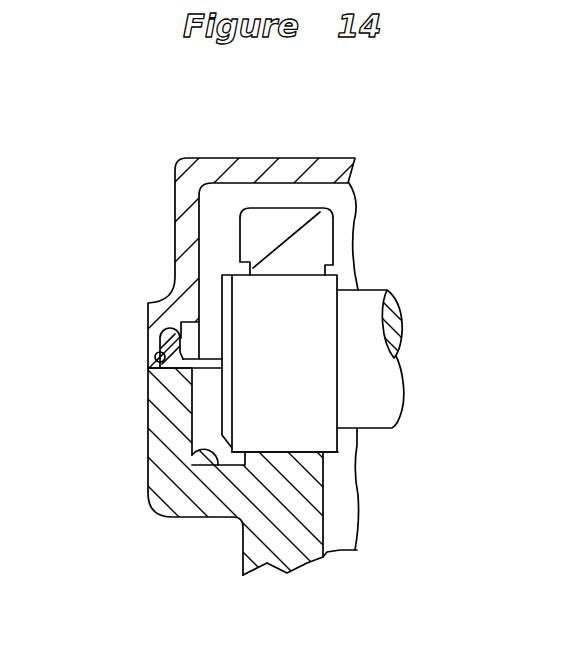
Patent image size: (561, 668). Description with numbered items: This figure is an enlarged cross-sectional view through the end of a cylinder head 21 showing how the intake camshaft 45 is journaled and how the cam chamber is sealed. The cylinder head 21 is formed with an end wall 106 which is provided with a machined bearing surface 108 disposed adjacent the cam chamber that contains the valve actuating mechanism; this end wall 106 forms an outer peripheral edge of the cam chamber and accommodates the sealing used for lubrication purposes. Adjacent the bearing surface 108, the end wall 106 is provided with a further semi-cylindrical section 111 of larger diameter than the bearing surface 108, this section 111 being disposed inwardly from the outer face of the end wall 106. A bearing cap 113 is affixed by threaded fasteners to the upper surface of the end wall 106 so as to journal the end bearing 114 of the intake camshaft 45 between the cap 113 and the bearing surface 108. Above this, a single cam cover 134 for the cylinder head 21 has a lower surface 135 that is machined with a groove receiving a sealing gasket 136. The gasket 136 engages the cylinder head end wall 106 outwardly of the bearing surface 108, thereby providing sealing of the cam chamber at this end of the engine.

The cam cover 134 is at (175, 239).
The bearing cap 113 is at (325, 236).
The end bearing 114 is at (247, 292).
The intake camshaft 45 is at (385, 288).
The sealing gasket 136 is at (163, 338).
The lower surface 135 is at (157, 358).
The bearing surface 108 is at (297, 452).
The end wall 106 is at (158, 462).
The cylinder head 21 is at (224, 545).
The semi-cylindrical section 111 is at (200, 452).